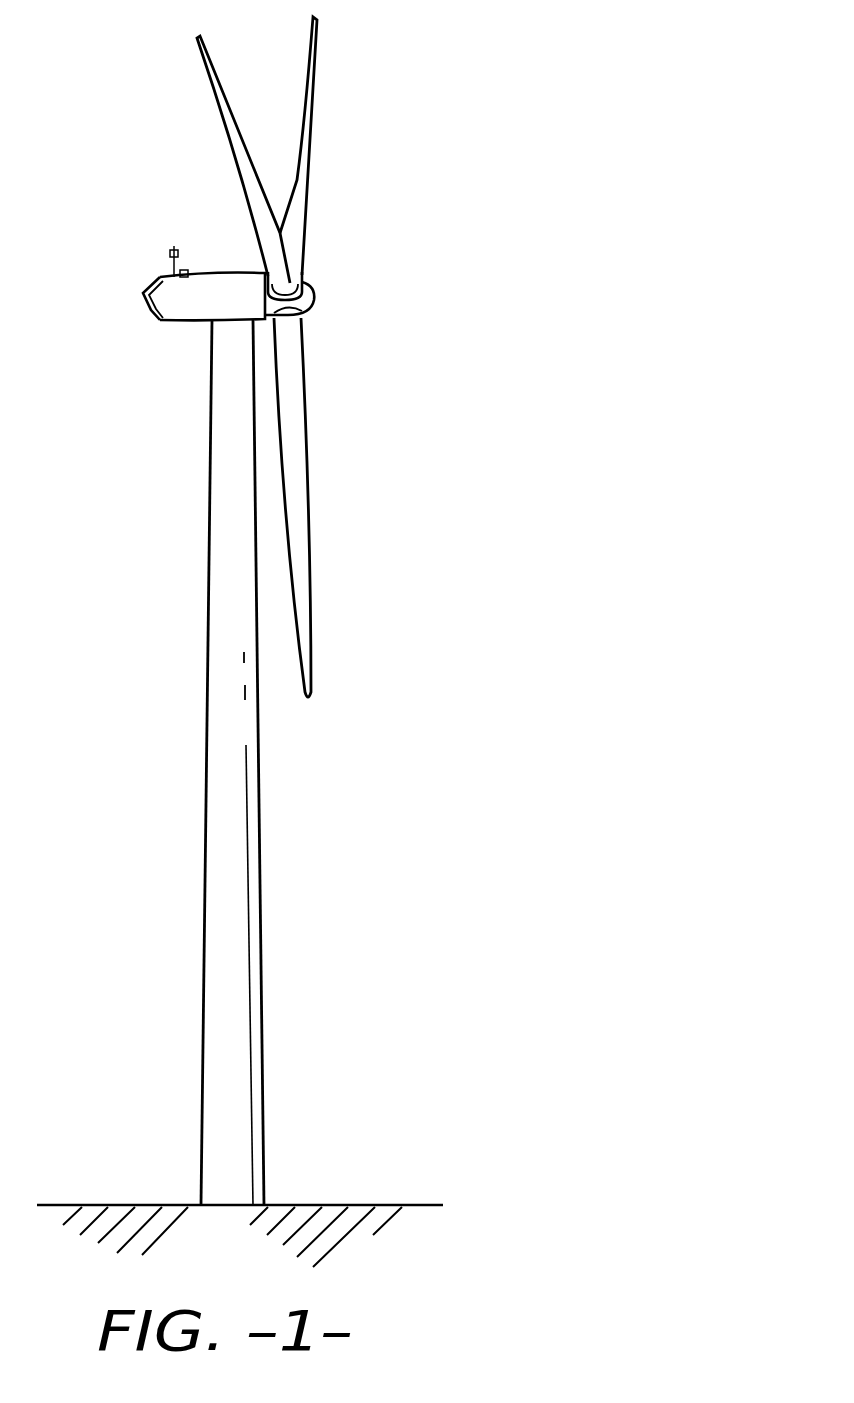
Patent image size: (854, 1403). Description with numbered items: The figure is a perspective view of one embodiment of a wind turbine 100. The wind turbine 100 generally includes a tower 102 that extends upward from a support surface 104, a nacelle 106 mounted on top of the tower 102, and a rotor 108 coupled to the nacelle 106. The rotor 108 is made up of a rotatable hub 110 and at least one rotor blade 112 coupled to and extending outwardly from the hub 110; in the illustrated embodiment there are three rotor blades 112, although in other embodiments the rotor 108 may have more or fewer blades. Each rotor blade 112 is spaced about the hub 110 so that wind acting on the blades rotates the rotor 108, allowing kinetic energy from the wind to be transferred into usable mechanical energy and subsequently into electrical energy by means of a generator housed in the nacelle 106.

The wind turbine 100 is at (430, 128).
The tower 102 is at (217, 883).
The support surface 104 is at (335, 1205).
The nacelle 106 is at (187, 320).
The rotor 108 is at (273, 357).
The rotatable hub 110 is at (313, 298).
The rotor blade 112 is at (222, 127).